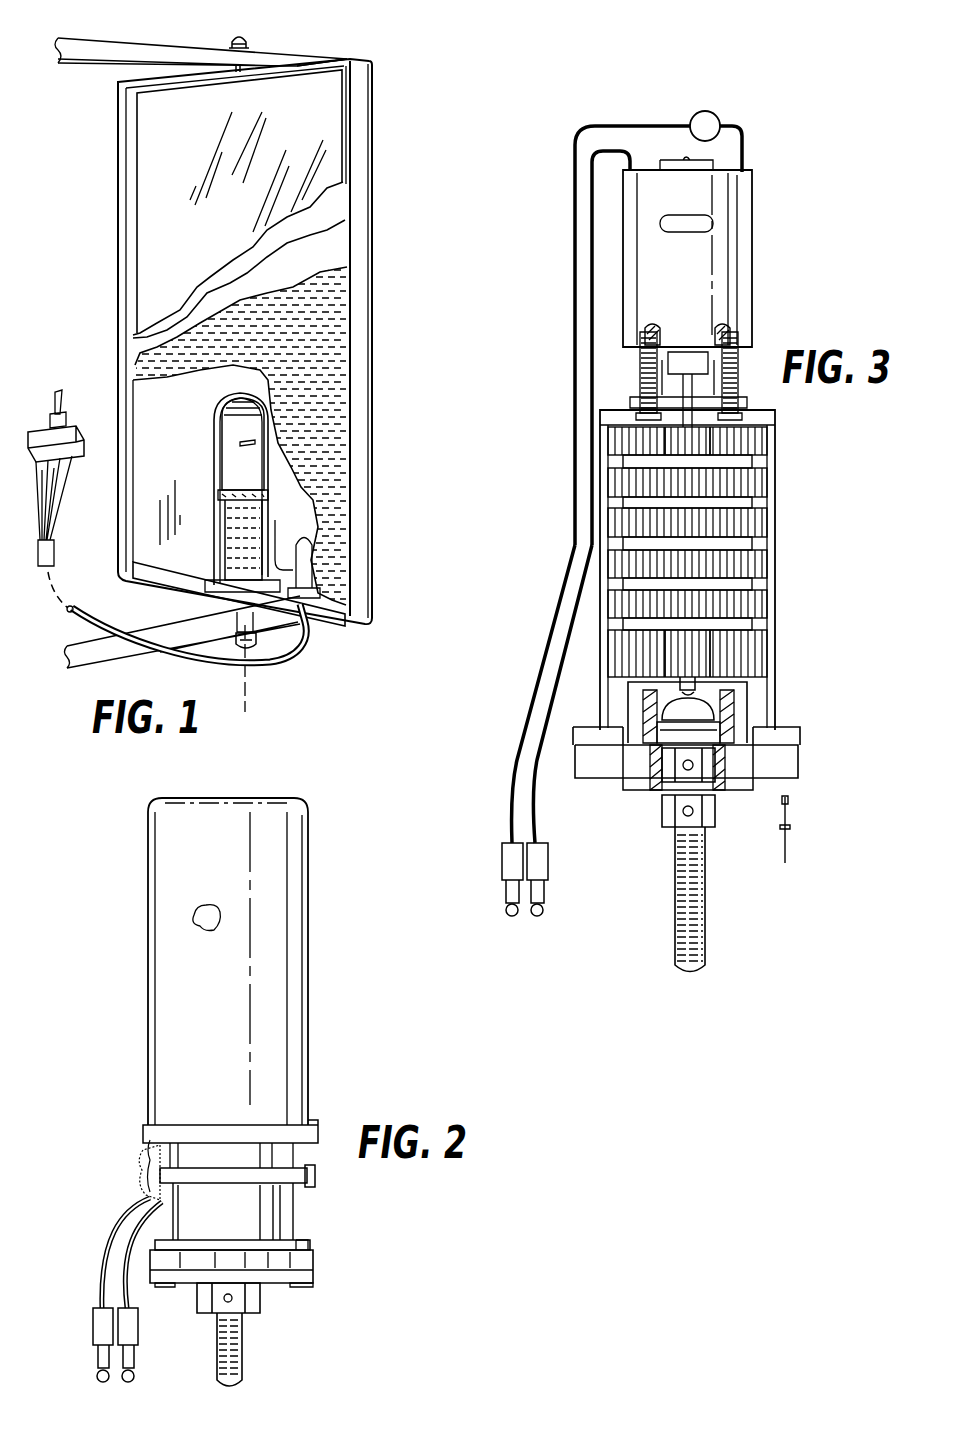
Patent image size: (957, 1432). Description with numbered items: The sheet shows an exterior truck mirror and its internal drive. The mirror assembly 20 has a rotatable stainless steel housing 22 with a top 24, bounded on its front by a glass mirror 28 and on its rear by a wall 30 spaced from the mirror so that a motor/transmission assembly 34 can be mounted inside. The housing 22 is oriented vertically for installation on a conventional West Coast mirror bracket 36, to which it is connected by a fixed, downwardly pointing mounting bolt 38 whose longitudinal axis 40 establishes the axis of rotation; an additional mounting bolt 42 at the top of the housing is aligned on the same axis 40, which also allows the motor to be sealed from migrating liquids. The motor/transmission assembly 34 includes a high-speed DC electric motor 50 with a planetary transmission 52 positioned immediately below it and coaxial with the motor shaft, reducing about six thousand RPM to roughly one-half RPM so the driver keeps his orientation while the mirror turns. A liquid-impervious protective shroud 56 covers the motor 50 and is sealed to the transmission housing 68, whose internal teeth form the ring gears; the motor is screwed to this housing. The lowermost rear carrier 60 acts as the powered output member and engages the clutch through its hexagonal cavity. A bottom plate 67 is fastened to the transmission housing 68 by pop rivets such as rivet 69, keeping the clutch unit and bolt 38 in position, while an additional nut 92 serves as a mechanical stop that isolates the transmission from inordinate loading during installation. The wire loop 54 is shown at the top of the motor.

In FIG. 1, the mirror assembly 20 is at (394, 134).
In FIG. 1, the rotatable housing 22 is at (358, 320).
In FIG. 1, the top 24 is at (298, 57).
In FIG. 1, the mirror 28 is at (178, 180).
In FIG. 1, the wall 30 is at (183, 560).
In FIG. 1, the motor/transmission assembly 34 is at (230, 467).
In FIG. 2, the motor/transmission assembly 34 is at (312, 1006).
In FIG. 1, the mirror bracket 36 is at (146, 52).
In FIG. 1, the mounting bolt 38 is at (252, 648).
In FIG. 2, the mounting bolt 38 is at (236, 1338).
In FIG. 3, the mounting bolt 38 is at (700, 922).
In FIG. 1, the longitudinal axis 40 is at (240, 692).
In FIG. 1, the additional mounting bolt 42 is at (245, 43).
In FIG. 2, the electric motor 50 is at (194, 922).
In FIG. 3, the electric motor 50 is at (718, 283).
In FIG. 2, the transmission 52 is at (273, 1200).
In FIG. 3, the transmission 52 is at (758, 543).
In FIG. 3, the wire loop 54 is at (712, 122).
In FIG. 2, the protective shroud 56 is at (295, 863).
In FIG. 3, the rear carrier 60 is at (740, 706).
In FIG. 2, the bottom plate 67 is at (312, 1282).
In FIG. 3, the bottom plate 67 is at (790, 768).
In FIG. 2, the transmission housing 68 is at (312, 1247).
In FIG. 2, the pop rivet 69 is at (298, 1290).
In FIG. 3, the pop rivet 69 is at (790, 812).
In FIG. 3, the additional nut 92 is at (668, 820).